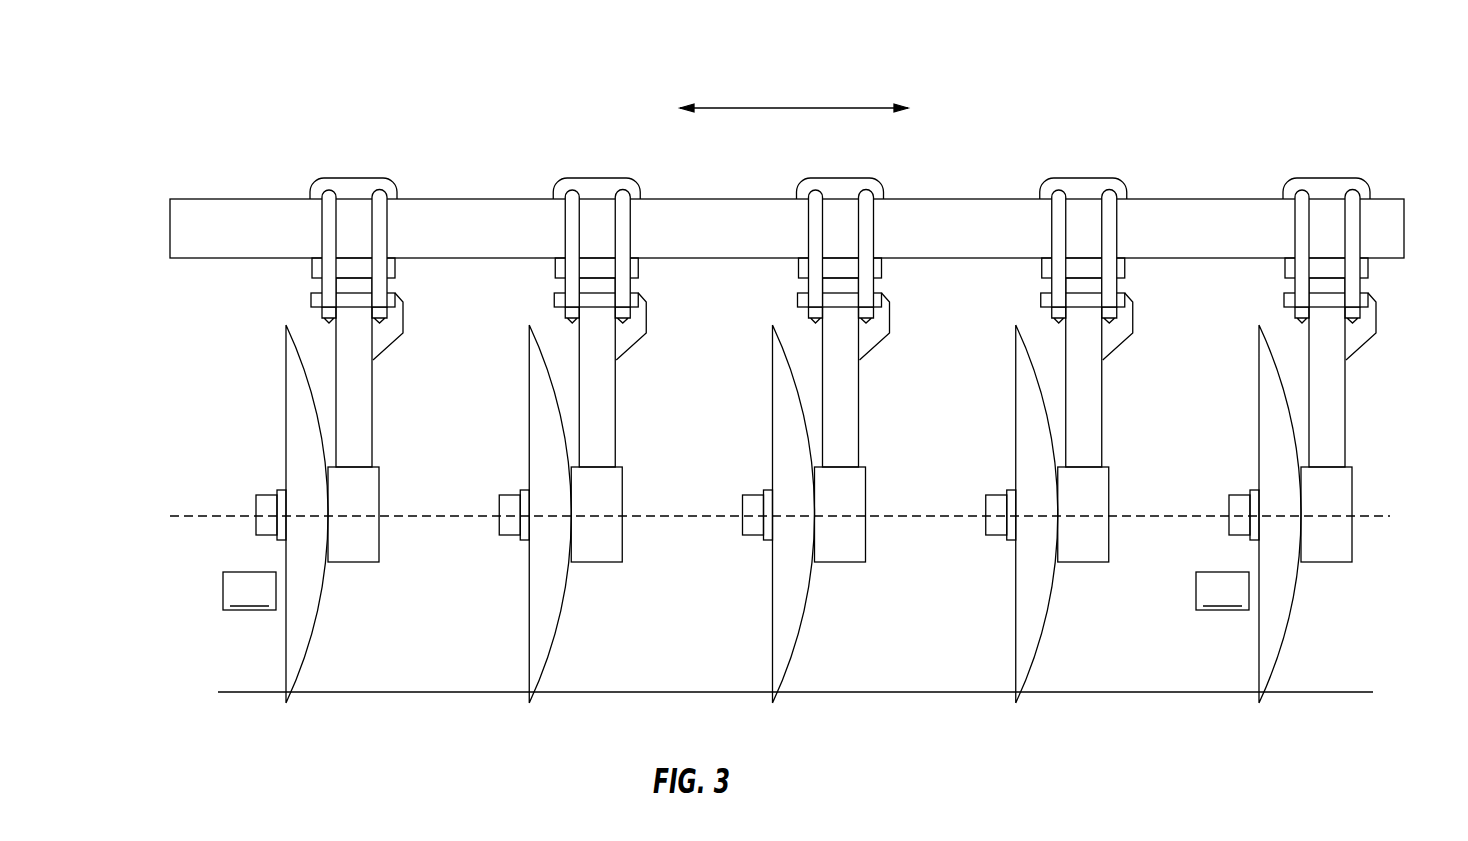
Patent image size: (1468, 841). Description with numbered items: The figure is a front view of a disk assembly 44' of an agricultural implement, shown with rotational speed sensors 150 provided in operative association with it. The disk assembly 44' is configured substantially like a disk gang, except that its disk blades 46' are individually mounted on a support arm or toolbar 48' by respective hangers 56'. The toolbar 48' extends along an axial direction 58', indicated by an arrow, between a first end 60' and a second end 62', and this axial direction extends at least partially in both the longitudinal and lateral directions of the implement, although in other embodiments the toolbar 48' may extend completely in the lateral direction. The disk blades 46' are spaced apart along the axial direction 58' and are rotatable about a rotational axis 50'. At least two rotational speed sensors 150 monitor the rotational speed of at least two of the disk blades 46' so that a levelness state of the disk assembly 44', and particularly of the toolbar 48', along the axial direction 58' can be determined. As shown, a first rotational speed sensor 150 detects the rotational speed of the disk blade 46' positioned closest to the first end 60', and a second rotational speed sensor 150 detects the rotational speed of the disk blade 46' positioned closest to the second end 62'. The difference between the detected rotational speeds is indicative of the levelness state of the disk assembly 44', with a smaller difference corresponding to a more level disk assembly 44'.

The disk assembly 44' is at (748, 189).
The disk blades 46' is at (819, 532).
The toolbar 48' is at (787, 207).
The rotational axis 50' is at (805, 539).
The hangers 56' is at (865, 372).
The axial direction 58' is at (794, 87).
The first end 60' is at (184, 455).
The second end 62' is at (1345, 428).
The rotational speed sensors 150 is at (249, 516).